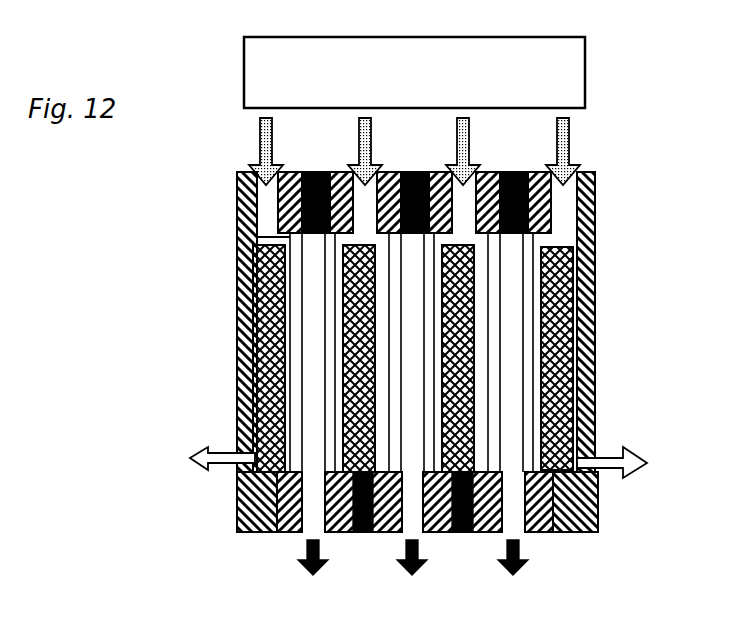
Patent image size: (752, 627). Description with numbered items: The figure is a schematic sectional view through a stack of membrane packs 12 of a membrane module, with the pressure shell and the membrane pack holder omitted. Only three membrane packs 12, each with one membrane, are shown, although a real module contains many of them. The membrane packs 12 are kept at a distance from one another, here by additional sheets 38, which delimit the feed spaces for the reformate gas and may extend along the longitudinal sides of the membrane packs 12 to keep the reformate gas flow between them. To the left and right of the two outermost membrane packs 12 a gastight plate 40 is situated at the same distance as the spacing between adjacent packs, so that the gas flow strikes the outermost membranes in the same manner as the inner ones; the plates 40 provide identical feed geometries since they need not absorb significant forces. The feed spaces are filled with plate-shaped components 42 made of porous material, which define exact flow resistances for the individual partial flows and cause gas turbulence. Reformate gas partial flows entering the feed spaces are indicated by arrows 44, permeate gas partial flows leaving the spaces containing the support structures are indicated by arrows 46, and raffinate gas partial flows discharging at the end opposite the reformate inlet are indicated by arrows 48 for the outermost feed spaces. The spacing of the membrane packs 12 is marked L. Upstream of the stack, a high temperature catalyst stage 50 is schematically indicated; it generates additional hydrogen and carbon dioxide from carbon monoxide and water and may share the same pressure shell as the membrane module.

The high temperature catalyst stage 50 is at (574, 62).
The arrows indicating reformate gas partial flows 44 is at (572, 150).
The membrane pack 12 is at (348, 152).
The gap width L is at (257, 237).
The plate-shaped porous component 42 is at (553, 315).
The gastight plate 40 is at (590, 421).
The sheet 38 is at (365, 535).
The arrows indicating permeate gas partial flows 46 is at (520, 553).
The arrows indicating raffinate gas partial flows 48 is at (618, 452).